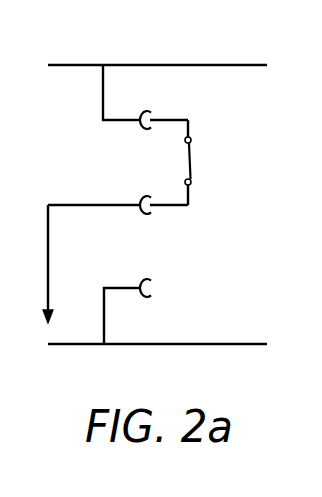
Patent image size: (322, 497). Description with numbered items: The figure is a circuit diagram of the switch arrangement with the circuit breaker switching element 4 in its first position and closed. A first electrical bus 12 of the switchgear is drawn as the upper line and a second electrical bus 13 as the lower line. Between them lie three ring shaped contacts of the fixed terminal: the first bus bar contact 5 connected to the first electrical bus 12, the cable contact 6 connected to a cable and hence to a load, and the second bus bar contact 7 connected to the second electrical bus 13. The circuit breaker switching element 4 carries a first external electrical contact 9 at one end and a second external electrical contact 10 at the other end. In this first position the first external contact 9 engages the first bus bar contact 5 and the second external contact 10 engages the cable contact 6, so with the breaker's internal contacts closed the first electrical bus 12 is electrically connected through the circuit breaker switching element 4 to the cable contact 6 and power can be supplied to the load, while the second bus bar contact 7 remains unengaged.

The first electrical bus 12 is at (222, 64).
The second electrical bus 13 is at (222, 346).
The first external electrical contact 9 is at (173, 118).
The second external electrical contact 10 is at (178, 207).
The circuit breaker switching element 4 is at (192, 160).
The first bus bar contact 5 is at (141, 129).
The cable contact 6 is at (142, 214).
The second bus bar contact 7 is at (142, 298).